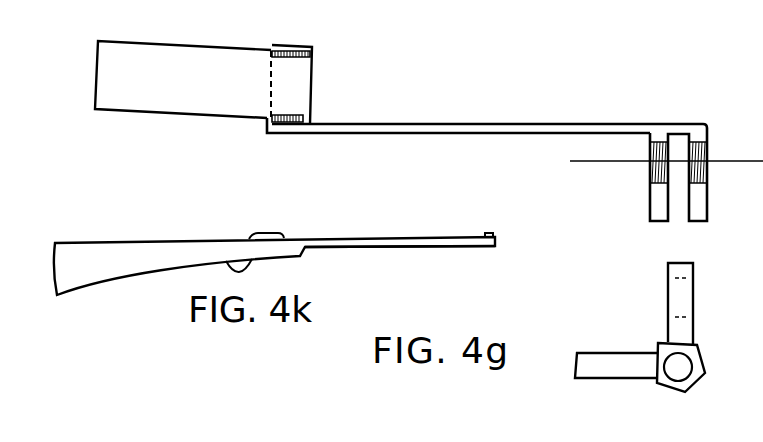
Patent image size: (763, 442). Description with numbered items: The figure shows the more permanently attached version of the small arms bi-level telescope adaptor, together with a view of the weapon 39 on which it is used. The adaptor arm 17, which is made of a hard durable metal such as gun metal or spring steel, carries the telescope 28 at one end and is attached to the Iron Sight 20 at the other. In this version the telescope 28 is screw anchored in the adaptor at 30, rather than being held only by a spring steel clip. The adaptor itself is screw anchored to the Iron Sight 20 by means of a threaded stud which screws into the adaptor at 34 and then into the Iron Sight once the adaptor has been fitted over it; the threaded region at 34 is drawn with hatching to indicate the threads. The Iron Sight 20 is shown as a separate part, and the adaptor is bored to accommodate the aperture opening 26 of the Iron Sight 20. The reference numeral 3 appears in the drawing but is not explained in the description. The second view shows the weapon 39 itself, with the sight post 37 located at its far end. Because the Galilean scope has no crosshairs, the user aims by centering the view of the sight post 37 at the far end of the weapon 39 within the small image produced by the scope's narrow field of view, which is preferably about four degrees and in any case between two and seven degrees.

In FIG. 4G, the bracket 3 is at (688, 123).
In FIG. 4G, the adaptor arm 17 is at (532, 123).
In FIG. 4G, the Iron Sight 20 is at (695, 383).
In FIG. 4G, the aperture opening 26 is at (697, 302).
In FIG. 4G, the telescope 28 is at (225, 119).
In FIG. 4K, the telescope 28 is at (262, 233).
In FIG. 4G, the screw anchor location 30 is at (293, 44).
In FIG. 4G, the threaded location in adaptor 34 is at (647, 183).
In FIG. 4K, the sight post 37 is at (490, 233).
In FIG. 4K, the weapon 39 is at (392, 247).